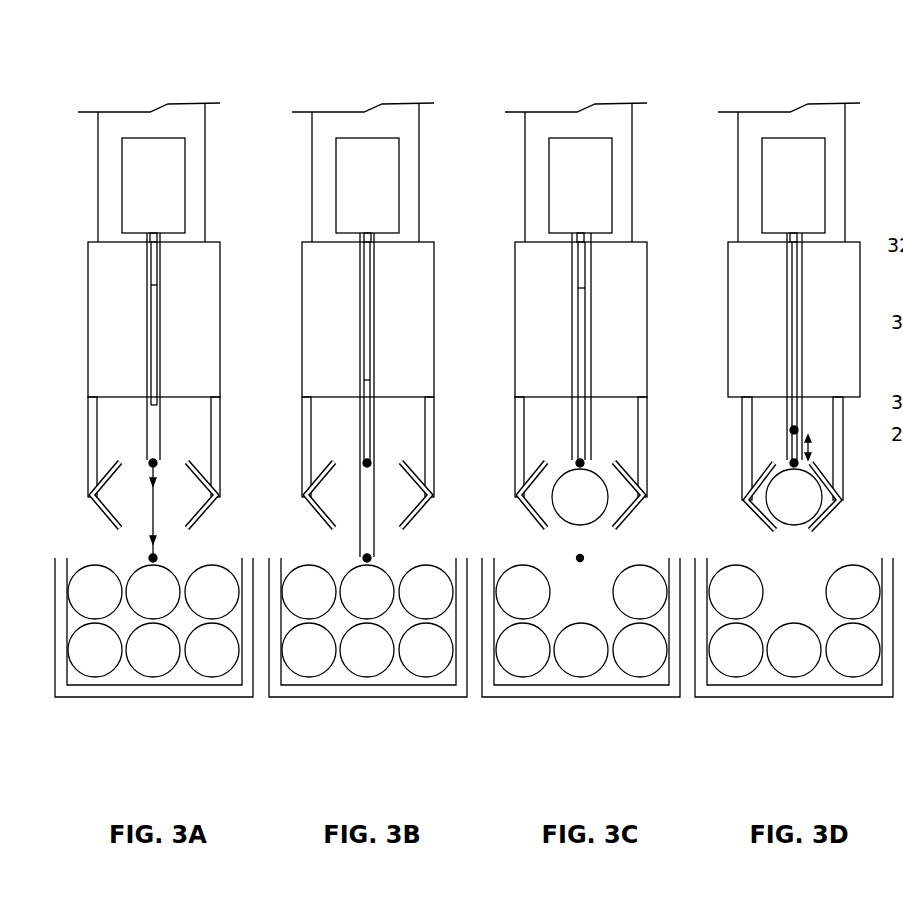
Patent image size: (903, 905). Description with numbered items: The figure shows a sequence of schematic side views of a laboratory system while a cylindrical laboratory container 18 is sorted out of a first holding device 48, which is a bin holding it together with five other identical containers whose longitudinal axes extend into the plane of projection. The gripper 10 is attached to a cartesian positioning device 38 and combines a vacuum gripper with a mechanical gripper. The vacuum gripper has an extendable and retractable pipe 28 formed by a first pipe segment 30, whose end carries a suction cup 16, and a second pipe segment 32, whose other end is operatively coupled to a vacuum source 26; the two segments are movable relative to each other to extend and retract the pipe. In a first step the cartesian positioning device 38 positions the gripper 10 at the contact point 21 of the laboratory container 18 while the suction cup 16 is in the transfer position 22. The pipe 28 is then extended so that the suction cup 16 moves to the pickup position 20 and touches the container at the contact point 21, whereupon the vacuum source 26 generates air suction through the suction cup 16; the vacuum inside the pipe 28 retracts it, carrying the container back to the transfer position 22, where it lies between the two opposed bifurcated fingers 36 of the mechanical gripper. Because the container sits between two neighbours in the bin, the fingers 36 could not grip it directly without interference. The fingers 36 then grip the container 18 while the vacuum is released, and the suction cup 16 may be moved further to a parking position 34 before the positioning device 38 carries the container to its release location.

In FIG. 3A, the gripper 10 is at (232, 226).
In FIG. 3B, the gripper 10 is at (446, 222).
In FIG. 3C, the gripper 10 is at (654, 224).
In FIG. 3D, the gripper 10 is at (862, 224).
In FIG. 3A, the suction cup 16 is at (150, 460).
In FIG. 3B, the suction cup 16 is at (372, 562).
In FIG. 3C, the suction cup 16 is at (578, 460).
In FIG. 3D, the suction cup 16 is at (790, 460).
In FIG. 3A, the laboratory container 18 is at (153, 600).
In FIG. 3B, the laboratory container 18 is at (360, 597).
In FIG. 3C, the laboratory container 18 is at (582, 505).
In FIG. 3D, the laboratory container 18 is at (790, 510).
In FIG. 3A, the pickup position 20 is at (150, 556).
In FIG. 3B, the pickup position 20 is at (362, 556).
In FIG. 3C, the pickup position 20 is at (578, 556).
In FIG. 3A, the contact point 21 is at (150, 560).
In FIG. 3B, the contact point 21 is at (365, 577).
In FIG. 3A, the transfer position 22 is at (147, 462).
In FIG. 3B, the transfer position 22 is at (363, 462).
In FIG. 3C, the transfer position 22 is at (575, 462).
In FIG. 3D, the transfer position 22 is at (790, 462).
In FIG. 3A, the vacuum source 26 is at (135, 173).
In FIG. 3A, the extendable and retractable pipe 28 is at (46, 243).
In FIG. 3A, the first pipe segment 30 is at (147, 393).
In FIG. 3B, the first pipe segment 30 is at (362, 452).
In FIG. 3C, the first pipe segment 30 is at (577, 408).
In FIG. 3D, the first pipe segment 30 is at (790, 383).
In FIG. 3A, the second pipe segment 32 is at (147, 303).
In FIG. 3B, the second pipe segment 32 is at (358, 340).
In FIG. 3C, the second pipe segment 32 is at (573, 340).
In FIG. 3D, the second pipe segment 32 is at (786, 330).
In FIG. 3D, the parking position 34 is at (791, 430).
In FIG. 3A, the bifurcated fingers 36 is at (95, 493).
In FIG. 3C, the bifurcated fingers 36 is at (521, 493).
In FIG. 3D, the bifurcated fingers 36 is at (750, 497).
In FIG. 3A, the cartesian positioning device 38 is at (170, 122).
In FIG. 3B, the cartesian positioning device 38 is at (384, 122).
In FIG. 3C, the cartesian positioning device 38 is at (590, 122).
In FIG. 3D, the cartesian positioning device 38 is at (784, 122).
In FIG. 3A, the first holding device 48 is at (115, 688).
In FIG. 3B, the first holding device 48 is at (330, 690).
In FIG. 3C, the first holding device 48 is at (520, 690).
In FIG. 3D, the first holding device 48 is at (730, 690).